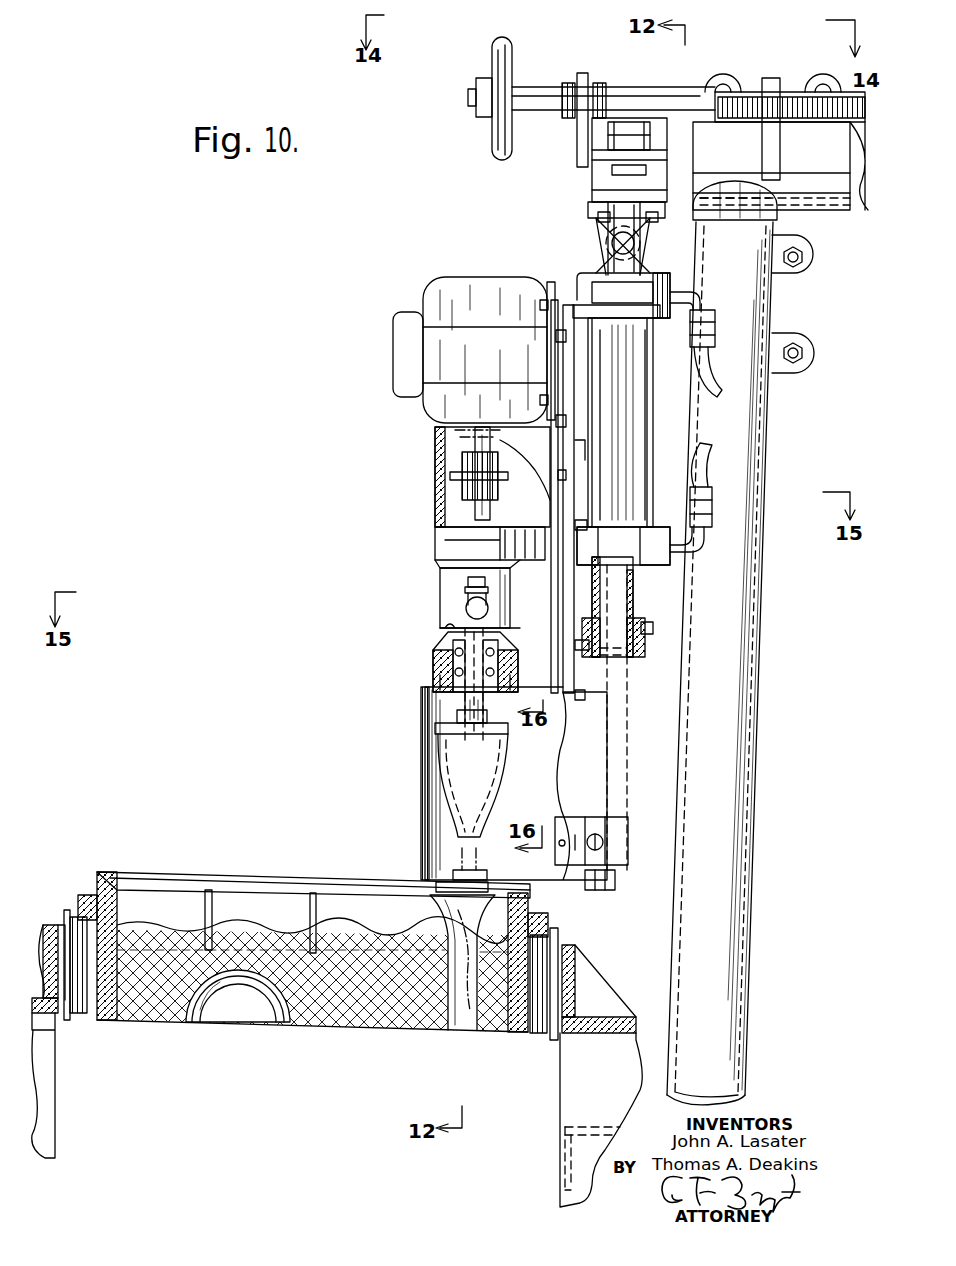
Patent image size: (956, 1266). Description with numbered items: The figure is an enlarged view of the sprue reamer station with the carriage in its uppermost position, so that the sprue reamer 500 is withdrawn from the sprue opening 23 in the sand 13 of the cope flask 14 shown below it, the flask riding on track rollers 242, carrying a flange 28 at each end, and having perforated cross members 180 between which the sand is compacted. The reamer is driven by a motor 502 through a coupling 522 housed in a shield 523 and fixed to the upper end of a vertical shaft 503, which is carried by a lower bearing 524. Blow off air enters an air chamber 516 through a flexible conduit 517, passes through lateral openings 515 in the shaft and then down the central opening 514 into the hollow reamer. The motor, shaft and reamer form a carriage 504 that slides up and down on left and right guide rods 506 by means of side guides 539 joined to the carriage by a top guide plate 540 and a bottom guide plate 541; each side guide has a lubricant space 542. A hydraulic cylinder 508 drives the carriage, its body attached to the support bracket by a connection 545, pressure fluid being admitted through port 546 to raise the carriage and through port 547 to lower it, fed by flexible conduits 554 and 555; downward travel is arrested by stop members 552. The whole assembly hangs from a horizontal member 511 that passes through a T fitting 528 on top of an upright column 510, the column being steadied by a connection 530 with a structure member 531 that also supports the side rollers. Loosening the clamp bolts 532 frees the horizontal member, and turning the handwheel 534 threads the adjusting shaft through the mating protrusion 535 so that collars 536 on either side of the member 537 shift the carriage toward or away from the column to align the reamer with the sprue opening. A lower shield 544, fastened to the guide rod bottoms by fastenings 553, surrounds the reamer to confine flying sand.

The sand 13 is at (360, 938).
The cope flask 14 is at (236, 878).
The sprue opening 23 is at (458, 1035).
The flange 28 is at (77, 900).
The perforated cross members 180 is at (305, 910).
The track rollers 242 is at (84, 1018).
The sprue reamer 500 is at (437, 742).
The motor 502 is at (440, 283).
The vertical shaft 503 is at (462, 712).
The carriage 504 is at (405, 494).
The guide rods 506 is at (627, 762).
The hydraulic cylinder 508 is at (648, 498).
The upright column 510 is at (757, 763).
The horizontal member 511 is at (858, 205).
The central opening 514 is at (465, 702).
The lateral openings 515 is at (440, 631).
The air chamber 516 is at (448, 628).
The flexible conduit 517 is at (466, 588).
The coupling 522 is at (498, 482).
The shield 523 is at (437, 462).
The lower bearing 524 is at (436, 647).
The T fitting 528 is at (630, 122).
The connection 530 is at (566, 1140).
The structure member 531 is at (564, 1172).
The clamp bolts 532 is at (818, 82).
The handwheel 534 is at (496, 56).
The mating protrusion 535 is at (780, 145).
The collars 536 is at (600, 82).
The member 537 is at (577, 130).
The side guides 539 is at (630, 462).
The top guide plate 540 is at (652, 315).
The bottom guide plate 541 is at (655, 636).
The lubricant space 542 is at (638, 612).
The lower shield 544 is at (425, 788).
The connection 545 is at (605, 246).
The port 546 is at (656, 620).
The port 547 is at (662, 290).
The stop members 552 is at (618, 823).
The fastenings 553 is at (604, 845).
The flexible conduit 554 is at (706, 475).
The flexible conduit 555 is at (715, 385).